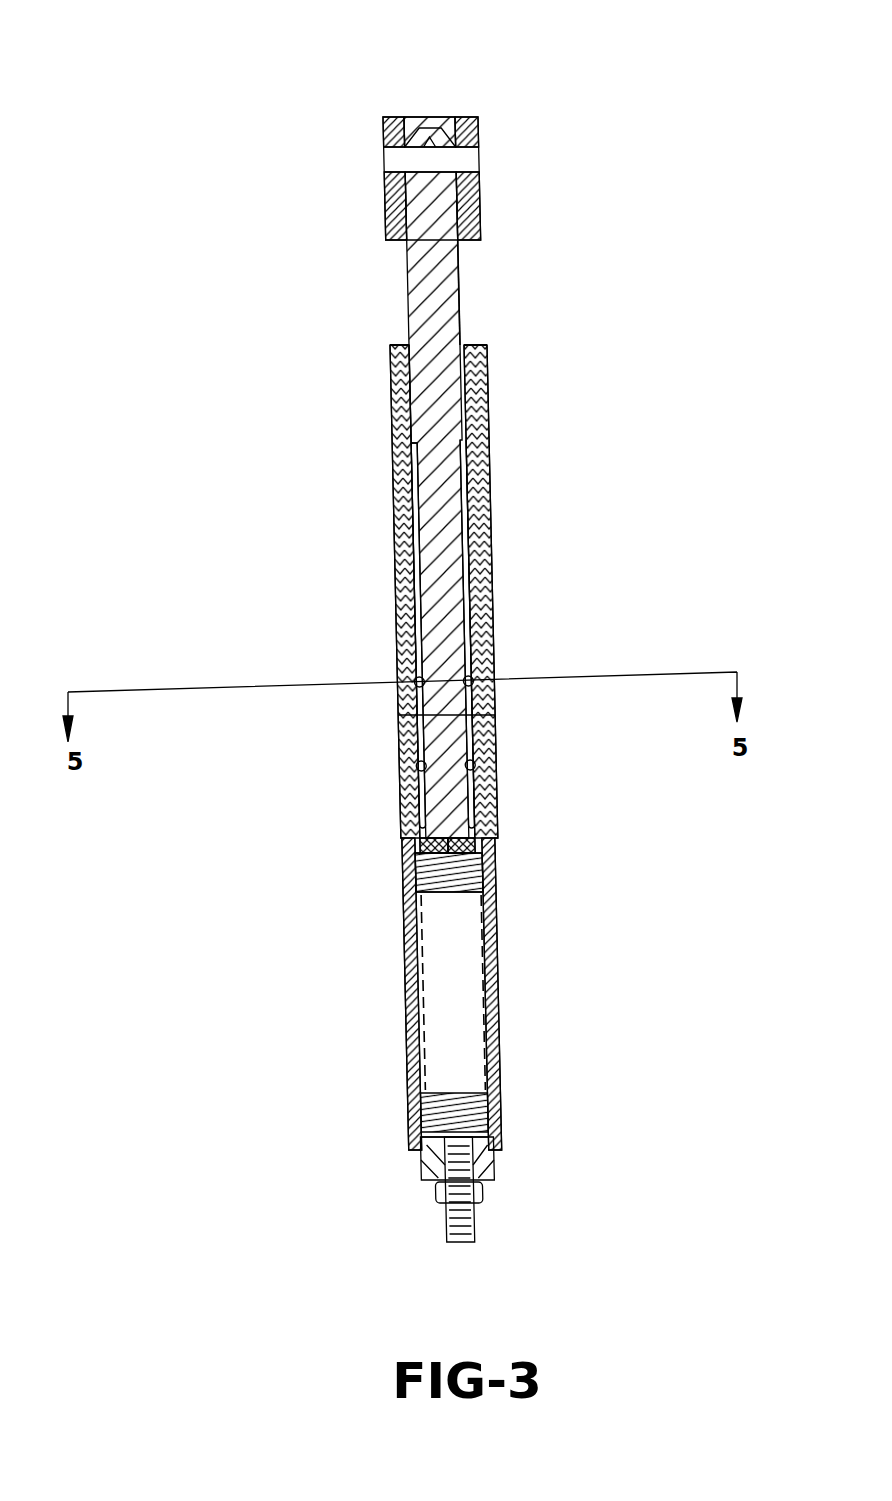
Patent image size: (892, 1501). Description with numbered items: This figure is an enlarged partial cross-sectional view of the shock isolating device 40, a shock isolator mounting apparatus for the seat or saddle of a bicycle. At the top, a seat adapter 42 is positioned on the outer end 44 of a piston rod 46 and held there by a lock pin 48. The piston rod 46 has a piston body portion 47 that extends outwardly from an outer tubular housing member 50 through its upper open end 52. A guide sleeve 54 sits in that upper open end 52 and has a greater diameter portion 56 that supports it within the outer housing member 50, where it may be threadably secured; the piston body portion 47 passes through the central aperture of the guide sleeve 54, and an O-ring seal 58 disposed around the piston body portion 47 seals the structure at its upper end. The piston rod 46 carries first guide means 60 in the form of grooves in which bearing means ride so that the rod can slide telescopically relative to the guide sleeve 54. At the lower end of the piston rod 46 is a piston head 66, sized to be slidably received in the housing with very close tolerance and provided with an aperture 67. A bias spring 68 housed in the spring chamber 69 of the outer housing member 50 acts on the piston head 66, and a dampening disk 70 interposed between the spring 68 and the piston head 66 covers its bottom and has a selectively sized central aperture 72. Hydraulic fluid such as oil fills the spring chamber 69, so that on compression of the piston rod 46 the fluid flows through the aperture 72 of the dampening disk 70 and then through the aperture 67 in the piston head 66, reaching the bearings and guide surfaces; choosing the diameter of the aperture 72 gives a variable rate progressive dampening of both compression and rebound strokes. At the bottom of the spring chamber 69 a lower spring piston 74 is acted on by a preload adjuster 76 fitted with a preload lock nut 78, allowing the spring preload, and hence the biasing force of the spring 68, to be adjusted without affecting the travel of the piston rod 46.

The shock isolating device 40 is at (380, 305).
The seat adapter 42 is at (470, 125).
The outer end 44 is at (420, 110).
The piston rod 46 is at (458, 290).
The piston body portion 47 is at (462, 258).
The lock pin 48 is at (460, 163).
The outer tubular housing member 50 is at (487, 513).
The upper open end 52 is at (383, 370).
The guide sleeve 54 is at (480, 618).
The greater diameter portion 56 is at (388, 347).
The O-ring seal 58 is at (470, 345).
The first guide means 60 is at (420, 504).
The piston head 66 is at (413, 828).
The aperture 67 is at (563, 810).
The bias spring 68 is at (473, 898).
The spring chamber 69 is at (437, 975).
The dampening disk 70 is at (490, 843).
The aperture 72 is at (418, 863).
The lower spring piston 74 is at (495, 1130).
The preload adjuster 76 is at (452, 1225).
The preload lock nut 78 is at (478, 1190).